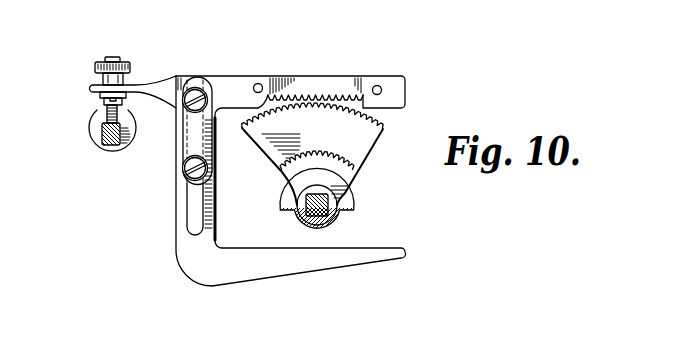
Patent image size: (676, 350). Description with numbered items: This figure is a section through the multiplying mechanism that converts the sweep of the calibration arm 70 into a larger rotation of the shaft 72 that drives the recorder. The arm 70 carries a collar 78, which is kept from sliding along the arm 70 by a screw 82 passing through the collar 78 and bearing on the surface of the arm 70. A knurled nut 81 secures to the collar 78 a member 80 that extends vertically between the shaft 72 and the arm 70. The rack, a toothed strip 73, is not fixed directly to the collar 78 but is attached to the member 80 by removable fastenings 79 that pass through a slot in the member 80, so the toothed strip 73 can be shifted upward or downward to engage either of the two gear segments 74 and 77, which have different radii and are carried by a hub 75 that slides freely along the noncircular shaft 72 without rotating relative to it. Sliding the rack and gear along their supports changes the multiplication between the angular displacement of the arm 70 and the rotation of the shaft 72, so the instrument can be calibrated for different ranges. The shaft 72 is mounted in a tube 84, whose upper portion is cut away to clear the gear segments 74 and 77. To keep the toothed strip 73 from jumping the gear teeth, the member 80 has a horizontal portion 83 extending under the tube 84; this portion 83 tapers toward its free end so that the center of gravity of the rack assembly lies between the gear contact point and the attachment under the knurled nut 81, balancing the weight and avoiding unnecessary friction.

The calibration arm 70 is at (105, 146).
The shaft 72 is at (332, 204).
The toothed strip 73 is at (330, 87).
The gear segment 74 is at (373, 130).
The hub 75 is at (302, 204).
The gear segment 77 is at (350, 163).
The collar 78 is at (90, 134).
The removable fastenings 79 is at (190, 157).
The member 80 is at (189, 221).
The knurled nut 81 is at (128, 65).
The screw 82 is at (99, 98).
The horizontal portion 83 is at (307, 264).
The tube 84 is at (349, 221).